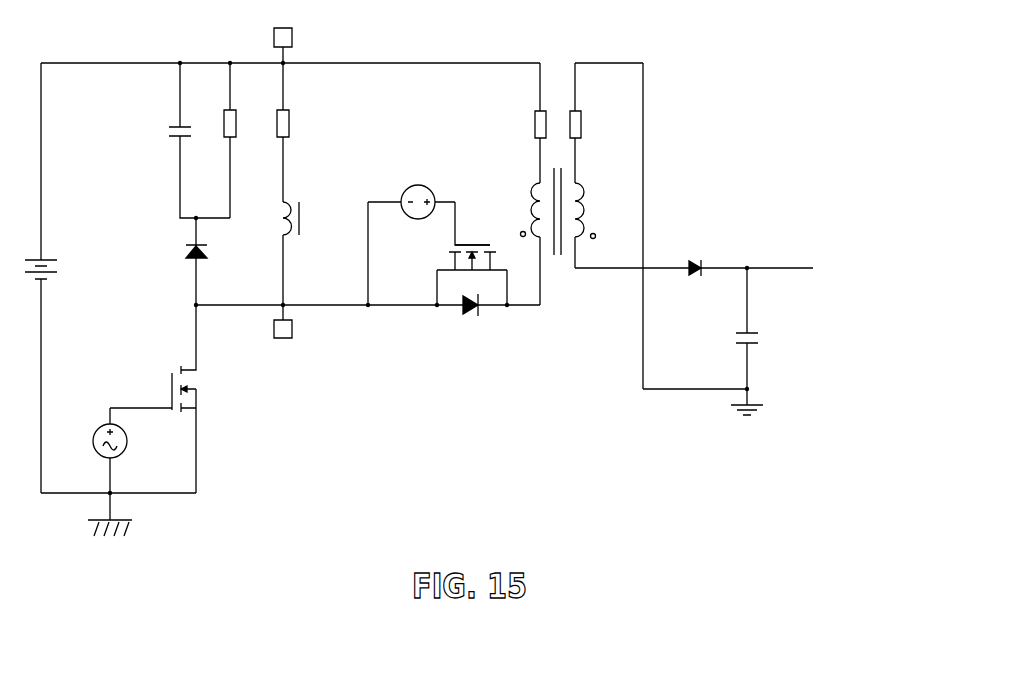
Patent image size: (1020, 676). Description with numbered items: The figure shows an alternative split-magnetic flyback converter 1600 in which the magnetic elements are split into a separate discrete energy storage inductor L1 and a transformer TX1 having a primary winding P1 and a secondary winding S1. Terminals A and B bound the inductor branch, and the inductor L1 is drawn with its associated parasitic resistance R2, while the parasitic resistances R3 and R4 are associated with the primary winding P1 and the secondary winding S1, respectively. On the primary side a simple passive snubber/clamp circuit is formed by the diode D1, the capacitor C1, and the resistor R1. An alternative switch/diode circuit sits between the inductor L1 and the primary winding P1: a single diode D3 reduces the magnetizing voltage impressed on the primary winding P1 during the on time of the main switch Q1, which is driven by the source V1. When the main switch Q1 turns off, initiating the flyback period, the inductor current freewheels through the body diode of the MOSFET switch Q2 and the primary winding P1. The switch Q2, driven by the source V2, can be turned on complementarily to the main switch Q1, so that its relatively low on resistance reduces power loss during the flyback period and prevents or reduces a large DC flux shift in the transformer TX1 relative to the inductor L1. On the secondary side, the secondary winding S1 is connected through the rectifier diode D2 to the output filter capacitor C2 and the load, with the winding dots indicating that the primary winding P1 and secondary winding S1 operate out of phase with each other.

The alternative split-magnetic flyback converter 1600 is at (682, 62).
The terminal A is at (283, 38).
The terminal B is at (283, 331).
The capacitor C1 is at (199, 140).
The output filter capacitor C2 is at (756, 328).
The resistor R1 is at (239, 140).
The parasitic resistance R2 is at (292, 132).
The parasitic resistance R3 is at (531, 123).
The parasitic resistance R4 is at (585, 123).
The energy storage inductor L1 is at (300, 247).
The diode D1 is at (184, 261).
The rectifier diode D2 is at (694, 260).
The diode D3 is at (471, 315).
The main switch Q1 is at (153, 399).
The MOSFET switch Q2 is at (476, 270).
The voltage source V1 is at (98, 450).
The voltage source V2 is at (429, 233).
The transformer TX1 is at (556, 197).
The primary winding P1 is at (523, 244).
The secondary winding S1 is at (587, 225).